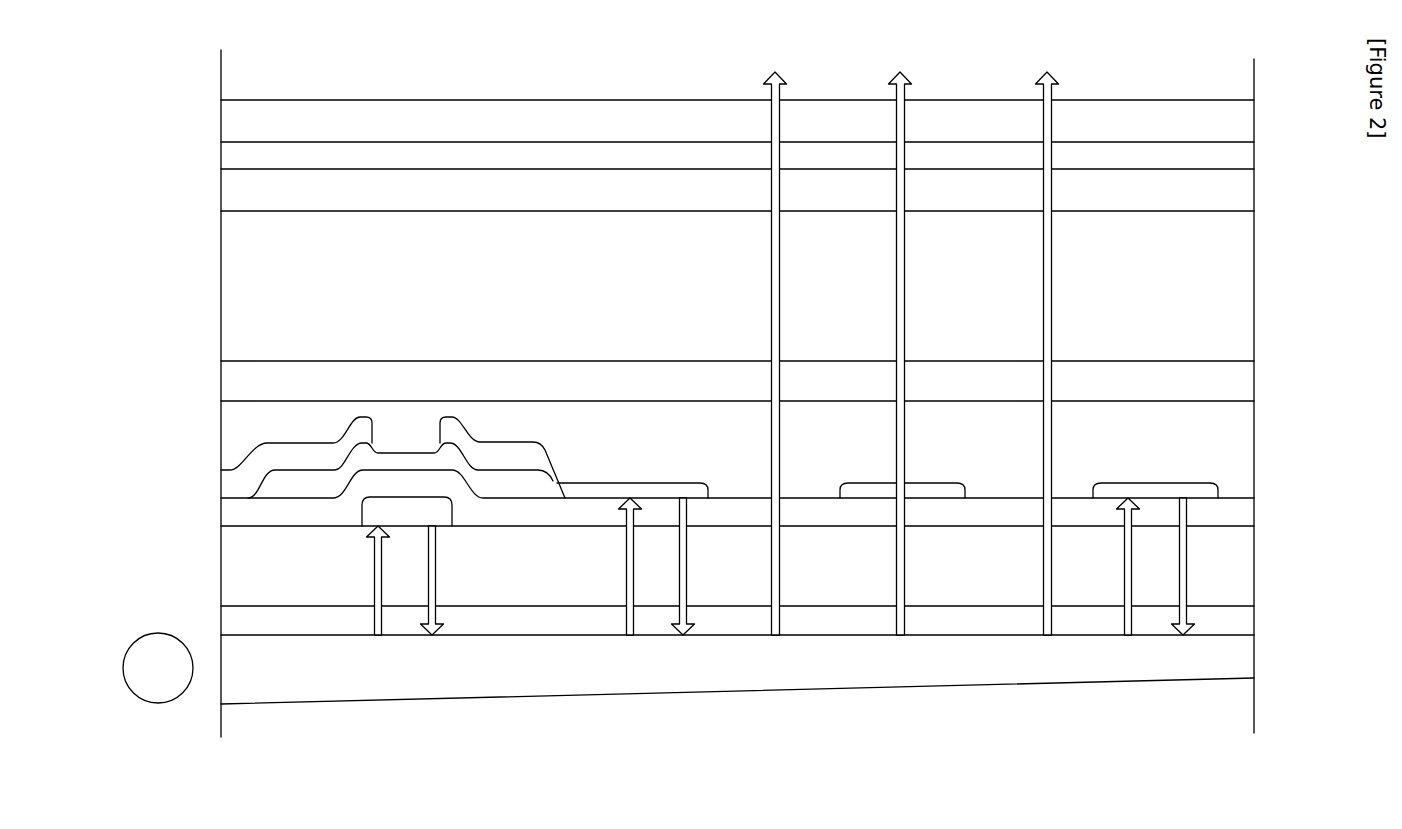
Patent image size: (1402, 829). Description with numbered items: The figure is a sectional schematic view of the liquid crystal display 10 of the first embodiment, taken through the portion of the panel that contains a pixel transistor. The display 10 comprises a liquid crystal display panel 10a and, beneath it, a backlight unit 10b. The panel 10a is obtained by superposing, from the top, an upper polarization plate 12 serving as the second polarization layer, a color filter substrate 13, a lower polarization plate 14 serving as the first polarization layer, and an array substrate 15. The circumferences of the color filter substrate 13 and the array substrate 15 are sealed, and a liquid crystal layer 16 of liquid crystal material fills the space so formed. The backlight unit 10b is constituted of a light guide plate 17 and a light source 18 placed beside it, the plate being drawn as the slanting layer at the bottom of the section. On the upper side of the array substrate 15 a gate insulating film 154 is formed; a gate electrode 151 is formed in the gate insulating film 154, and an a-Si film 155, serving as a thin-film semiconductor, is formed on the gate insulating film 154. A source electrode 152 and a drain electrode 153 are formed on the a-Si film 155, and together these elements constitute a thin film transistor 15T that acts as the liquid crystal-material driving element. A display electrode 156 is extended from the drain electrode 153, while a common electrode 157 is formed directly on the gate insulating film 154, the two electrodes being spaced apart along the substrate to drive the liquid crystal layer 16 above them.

The liquid crystal display 10 is at (668, 712).
The liquid crystal display panel 10a is at (140, 100).
The backlight unit 10b is at (288, 763).
The upper polarization plate 12 is at (221, 137).
The color filter substrate 13 is at (221, 197).
The lower polarization plate 14 is at (221, 388).
The array substrate 15 is at (216, 580).
The thin film transistor 15T is at (406, 430).
The liquid crystal layer 16 is at (221, 305).
The light guide plate 17 is at (260, 690).
The light source 18 is at (158, 688).
The gate electrode 151 is at (437, 512).
The source electrode 152 is at (277, 455).
The drain electrode 153 is at (520, 453).
The gate insulating film 154 is at (248, 512).
The a-Si film 155 is at (530, 482).
The display electrode 156 is at (663, 483).
The common electrode 157 is at (930, 483).